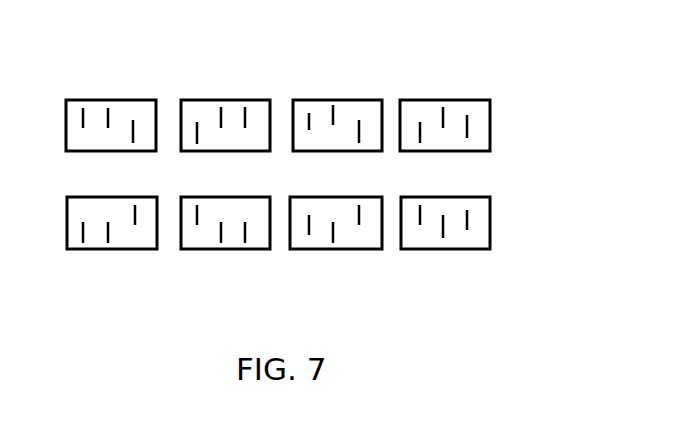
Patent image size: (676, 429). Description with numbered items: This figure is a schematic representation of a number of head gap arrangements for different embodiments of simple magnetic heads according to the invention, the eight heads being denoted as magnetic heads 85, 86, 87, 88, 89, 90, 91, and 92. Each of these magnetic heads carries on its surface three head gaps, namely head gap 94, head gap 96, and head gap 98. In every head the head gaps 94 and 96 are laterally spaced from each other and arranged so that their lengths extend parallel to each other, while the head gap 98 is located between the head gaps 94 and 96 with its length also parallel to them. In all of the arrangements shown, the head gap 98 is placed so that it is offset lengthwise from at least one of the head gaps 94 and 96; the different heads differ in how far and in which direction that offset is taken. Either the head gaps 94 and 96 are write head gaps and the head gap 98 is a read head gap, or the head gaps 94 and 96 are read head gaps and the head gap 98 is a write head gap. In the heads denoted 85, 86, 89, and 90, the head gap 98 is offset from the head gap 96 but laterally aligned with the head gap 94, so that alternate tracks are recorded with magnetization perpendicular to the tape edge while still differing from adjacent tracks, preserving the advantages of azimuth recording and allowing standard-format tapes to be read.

The magnetic head 85 is at (124, 118).
The magnetic head 86 is at (252, 153).
The magnetic head 87 is at (355, 153).
The magnetic head 88 is at (467, 153).
The magnetic head 89 is at (146, 251).
The magnetic head 90 is at (257, 251).
The magnetic head 91 is at (355, 251).
The magnetic head 92 is at (480, 251).
The head gap 94 is at (83, 113).
The head gap 98 is at (108, 112).
The head gap 96 is at (133, 122).